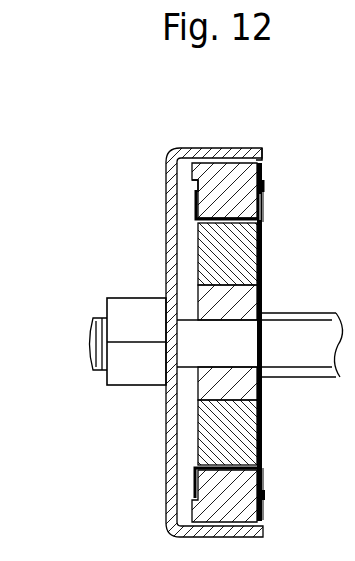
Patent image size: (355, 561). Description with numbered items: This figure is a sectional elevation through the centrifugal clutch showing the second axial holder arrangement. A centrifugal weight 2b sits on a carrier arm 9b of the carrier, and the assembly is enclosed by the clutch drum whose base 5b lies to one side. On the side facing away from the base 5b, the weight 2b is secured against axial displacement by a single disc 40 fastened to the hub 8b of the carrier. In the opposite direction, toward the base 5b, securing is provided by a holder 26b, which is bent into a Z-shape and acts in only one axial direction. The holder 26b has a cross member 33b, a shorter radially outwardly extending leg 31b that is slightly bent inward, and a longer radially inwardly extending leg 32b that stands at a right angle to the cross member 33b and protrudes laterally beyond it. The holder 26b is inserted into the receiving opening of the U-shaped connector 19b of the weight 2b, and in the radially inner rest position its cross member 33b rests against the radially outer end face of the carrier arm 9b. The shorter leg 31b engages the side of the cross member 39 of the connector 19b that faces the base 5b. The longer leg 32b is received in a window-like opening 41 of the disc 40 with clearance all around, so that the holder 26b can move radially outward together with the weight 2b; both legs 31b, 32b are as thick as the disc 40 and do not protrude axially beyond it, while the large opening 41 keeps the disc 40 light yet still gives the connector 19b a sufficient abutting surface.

The base of the clutch drum 5b is at (170, 412).
The centrifugal weight 2b is at (263, 167).
The connector 19b is at (240, 188).
The cross member 39 is at (220, 302).
The shorter leg 31b is at (192, 202).
The cross member 33b is at (222, 208).
The holder 26b is at (254, 248).
The hub 8b is at (245, 387).
The carrier arm 9b is at (207, 272).
The longer leg 32b is at (261, 238).
The window-like opening 41 is at (260, 203).
The disc 40 is at (260, 481).